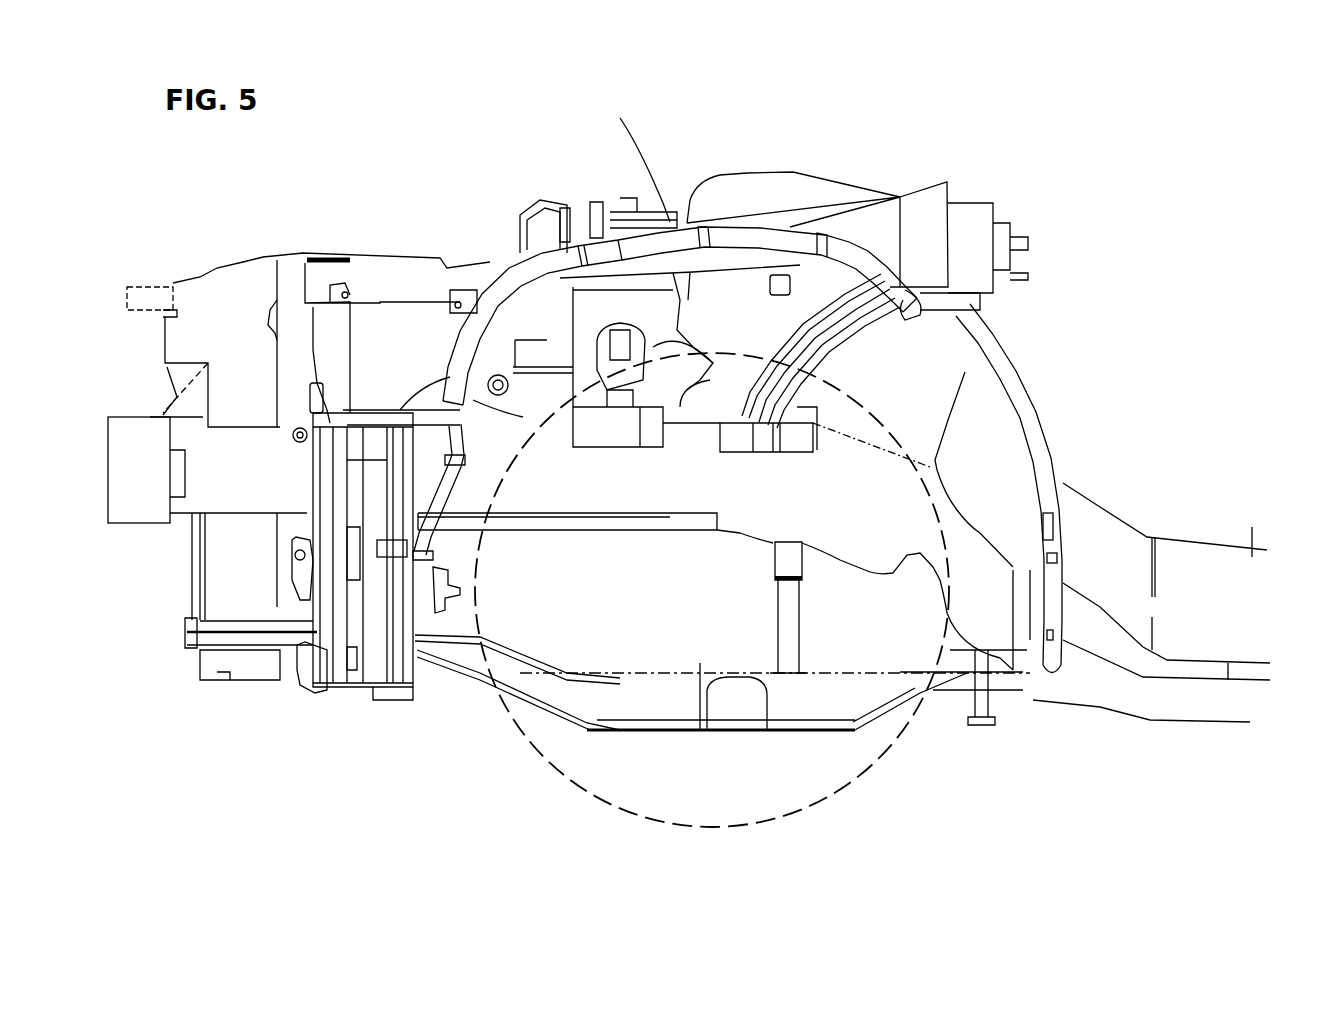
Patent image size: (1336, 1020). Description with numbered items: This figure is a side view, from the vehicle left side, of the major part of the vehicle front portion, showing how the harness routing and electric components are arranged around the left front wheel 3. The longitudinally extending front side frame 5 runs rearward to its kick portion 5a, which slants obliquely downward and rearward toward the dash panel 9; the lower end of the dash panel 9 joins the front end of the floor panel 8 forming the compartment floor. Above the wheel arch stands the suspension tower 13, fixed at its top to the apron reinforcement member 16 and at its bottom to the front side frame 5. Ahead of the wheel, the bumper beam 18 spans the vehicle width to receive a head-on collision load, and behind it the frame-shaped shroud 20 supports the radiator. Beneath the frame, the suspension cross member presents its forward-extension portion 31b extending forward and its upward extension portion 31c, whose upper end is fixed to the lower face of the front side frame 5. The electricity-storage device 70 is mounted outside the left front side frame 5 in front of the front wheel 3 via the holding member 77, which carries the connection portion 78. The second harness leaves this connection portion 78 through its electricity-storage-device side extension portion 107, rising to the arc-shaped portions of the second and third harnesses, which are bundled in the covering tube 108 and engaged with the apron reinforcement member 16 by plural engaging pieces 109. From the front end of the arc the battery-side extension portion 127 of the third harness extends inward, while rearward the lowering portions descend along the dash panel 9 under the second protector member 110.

The front wheel 3 is at (830, 800).
The front side frame 5 is at (660, 520).
The kick portion 5a is at (890, 575).
The floor panel 8 is at (1214, 720).
The dash panel 9 is at (1028, 700).
The suspension tower 13 is at (747, 185).
The apron reinforcement member 16 is at (900, 197).
The bumper beam 18 is at (140, 530).
The shroud 20 is at (190, 585).
The forward-extension portion 31b is at (650, 707).
The upward extension portion 31c is at (778, 620).
The electricity-storage device 70 is at (390, 660).
The holding member 77 is at (307, 650).
The connection portion 78 is at (443, 615).
The electricity-storage-device side extension portion 107 is at (455, 478).
The covering tube 108 is at (805, 200).
The engaging piece 109 is at (610, 202).
The second protector member 110 is at (1012, 393).
The battery-side extension portion 127 is at (567, 320).